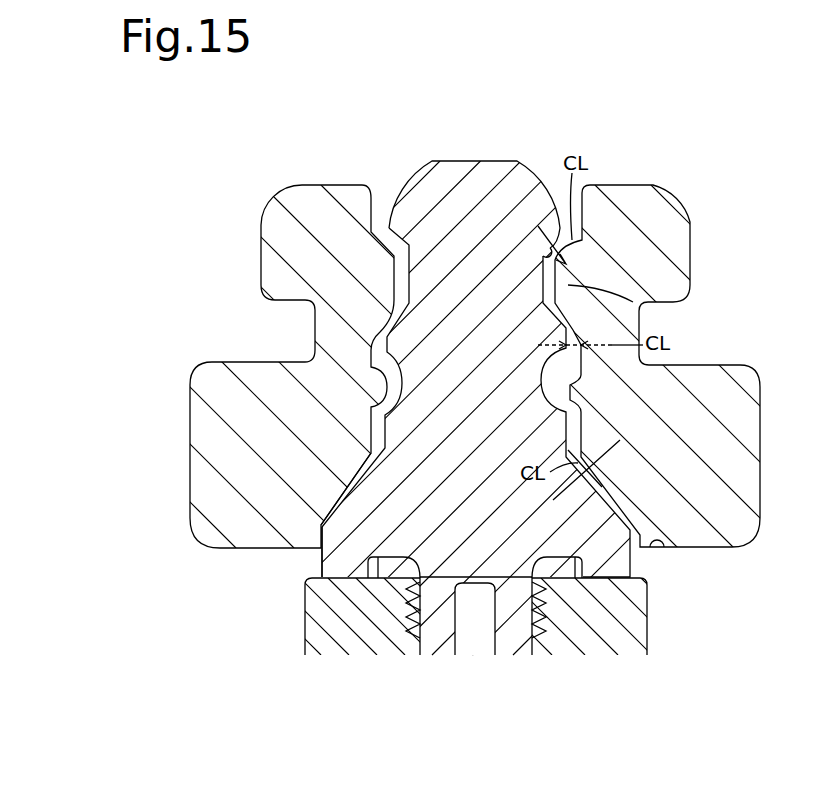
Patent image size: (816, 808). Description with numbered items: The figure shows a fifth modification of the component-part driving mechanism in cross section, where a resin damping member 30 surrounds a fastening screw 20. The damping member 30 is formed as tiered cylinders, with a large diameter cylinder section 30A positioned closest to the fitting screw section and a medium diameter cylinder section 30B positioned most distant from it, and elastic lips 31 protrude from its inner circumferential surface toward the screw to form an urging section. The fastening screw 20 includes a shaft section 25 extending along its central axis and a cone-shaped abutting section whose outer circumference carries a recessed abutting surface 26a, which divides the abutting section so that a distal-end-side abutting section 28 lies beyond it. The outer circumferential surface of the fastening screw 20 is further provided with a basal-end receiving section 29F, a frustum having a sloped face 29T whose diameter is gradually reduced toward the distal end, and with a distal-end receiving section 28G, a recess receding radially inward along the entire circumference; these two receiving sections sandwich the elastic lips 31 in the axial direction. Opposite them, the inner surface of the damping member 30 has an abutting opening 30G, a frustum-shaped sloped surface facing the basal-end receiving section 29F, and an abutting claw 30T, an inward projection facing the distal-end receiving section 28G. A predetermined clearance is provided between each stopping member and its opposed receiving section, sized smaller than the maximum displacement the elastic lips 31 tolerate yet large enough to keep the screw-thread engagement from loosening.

The damping member 30 is at (408, 358).
The medium diameter cylinder section 30B is at (261, 246).
The large diameter cylinder section 30A is at (190, 410).
The abutting claw 30T is at (644, 313).
The abutting opening 30G is at (654, 550).
The elastic lips 31 is at (326, 342).
The distal-end-side abutting section 28 is at (504, 161).
The distal-end receiving section 28G is at (546, 250).
The abutting surface 26a is at (403, 378).
The sloped face 29T is at (324, 498).
The basal-end receiving section 29F is at (320, 557).
The shaft section 25 is at (504, 640).
The fastening screw 20 is at (688, 616).